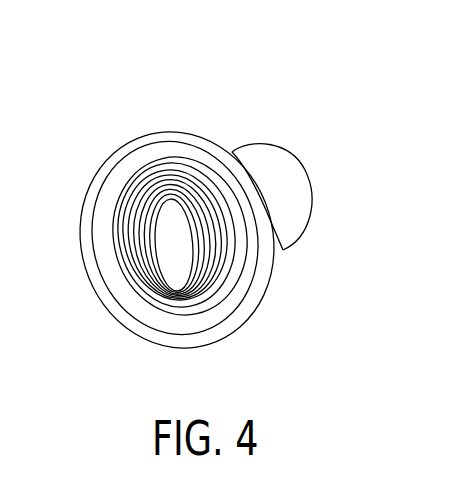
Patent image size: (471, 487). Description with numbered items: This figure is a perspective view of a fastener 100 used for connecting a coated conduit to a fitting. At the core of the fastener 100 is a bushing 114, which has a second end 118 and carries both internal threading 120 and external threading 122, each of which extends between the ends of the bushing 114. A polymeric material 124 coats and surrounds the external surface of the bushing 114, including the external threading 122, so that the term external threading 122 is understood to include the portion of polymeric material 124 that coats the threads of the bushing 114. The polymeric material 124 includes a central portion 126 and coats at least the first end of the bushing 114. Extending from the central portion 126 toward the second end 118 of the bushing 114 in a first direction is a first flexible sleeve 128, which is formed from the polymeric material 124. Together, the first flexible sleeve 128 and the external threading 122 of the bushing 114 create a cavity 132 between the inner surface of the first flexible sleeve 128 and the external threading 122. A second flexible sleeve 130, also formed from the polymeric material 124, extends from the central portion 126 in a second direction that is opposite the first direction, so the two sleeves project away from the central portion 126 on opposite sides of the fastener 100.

The fastener 100 is at (203, 197).
The bushing 114 is at (116, 272).
The second end 118 is at (152, 302).
The internal threading 120 is at (140, 236).
The external threading 122 is at (125, 180).
The polymeric material 124 is at (191, 120).
The central portion 126 is at (300, 259).
The first flexible sleeve 128 is at (160, 133).
The second flexible sleeve 130 is at (284, 157).
The cavity 132 is at (137, 150).